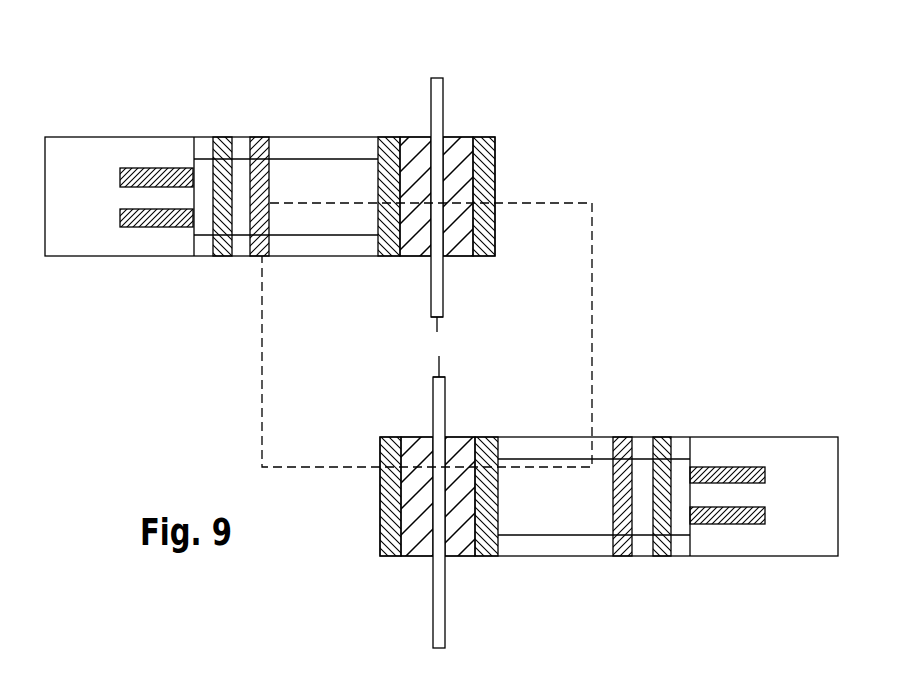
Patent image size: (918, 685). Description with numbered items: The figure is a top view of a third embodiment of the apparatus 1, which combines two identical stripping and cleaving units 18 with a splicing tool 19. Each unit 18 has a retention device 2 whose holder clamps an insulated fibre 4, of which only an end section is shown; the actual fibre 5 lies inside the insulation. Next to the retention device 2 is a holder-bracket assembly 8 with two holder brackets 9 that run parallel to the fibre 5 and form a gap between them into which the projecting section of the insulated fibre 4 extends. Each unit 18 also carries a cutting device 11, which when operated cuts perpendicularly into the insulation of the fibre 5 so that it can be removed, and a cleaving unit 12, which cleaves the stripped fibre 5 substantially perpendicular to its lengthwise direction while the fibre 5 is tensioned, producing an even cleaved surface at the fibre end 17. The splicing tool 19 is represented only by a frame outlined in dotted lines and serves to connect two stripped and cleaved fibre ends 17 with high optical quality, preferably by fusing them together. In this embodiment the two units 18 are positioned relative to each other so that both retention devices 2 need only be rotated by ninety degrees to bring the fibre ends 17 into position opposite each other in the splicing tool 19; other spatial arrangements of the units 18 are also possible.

The apparatus 1 is at (668, 148).
The retention device 2 is at (468, 130).
The insulated fibre 4 is at (446, 92).
The fibre 5 is at (438, 322).
The holder-bracket assembly 8 is at (76, 166).
The holder brackets 9 is at (121, 176).
The cutting device 11 is at (219, 268).
The cleaving unit 12 is at (262, 130).
The fibre end 17 is at (436, 331).
The units 18 is at (158, 107).
The splicing tool 19 is at (592, 287).